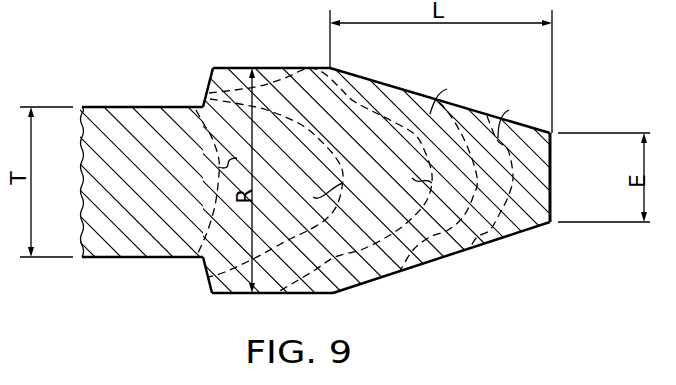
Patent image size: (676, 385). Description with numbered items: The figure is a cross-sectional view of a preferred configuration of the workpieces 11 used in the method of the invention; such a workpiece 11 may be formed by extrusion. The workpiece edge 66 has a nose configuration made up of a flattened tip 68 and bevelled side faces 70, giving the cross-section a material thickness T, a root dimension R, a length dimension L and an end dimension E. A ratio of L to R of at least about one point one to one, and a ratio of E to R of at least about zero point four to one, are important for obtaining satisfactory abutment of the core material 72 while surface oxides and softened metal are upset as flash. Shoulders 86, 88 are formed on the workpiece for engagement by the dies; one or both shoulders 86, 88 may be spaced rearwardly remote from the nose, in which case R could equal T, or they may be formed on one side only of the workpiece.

The workpiece 11 is at (95, 107).
The shoulder 88 is at (212, 72).
The shoulder 86 is at (209, 286).
The bevelled side faces 70 is at (407, 90).
The flattened tip 68 is at (553, 153).
The workpiece edge 66 is at (466, 272).
The core material 72 is at (370, 200).